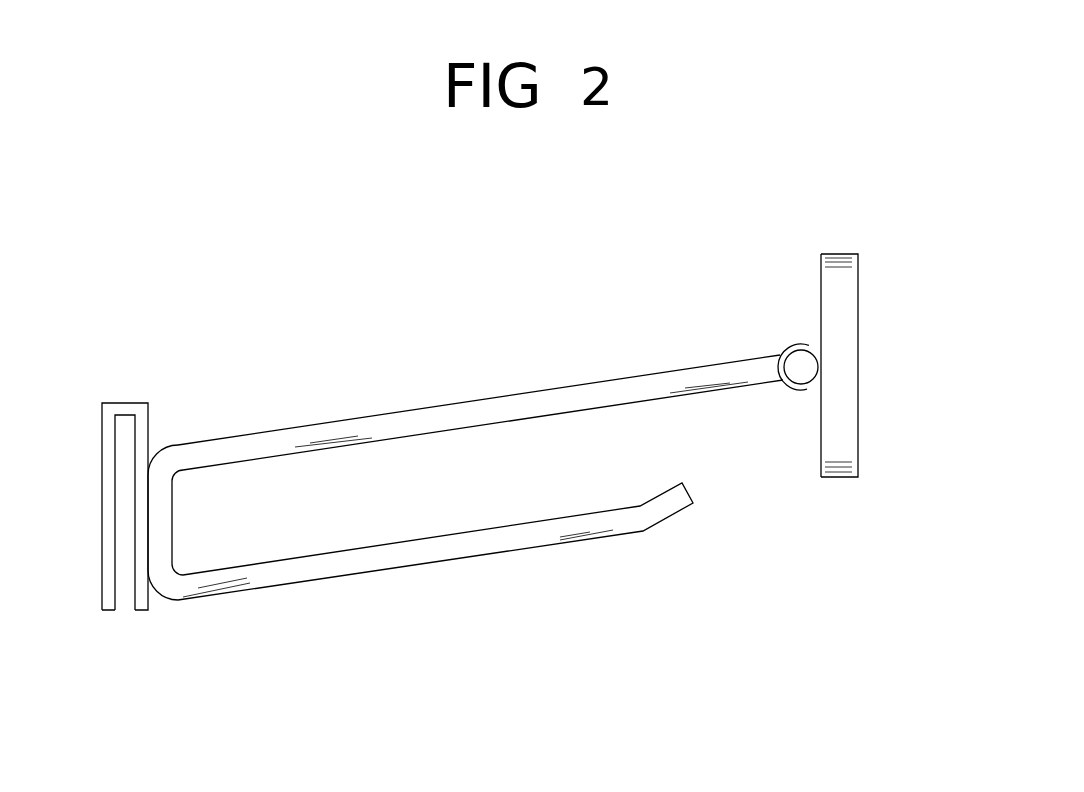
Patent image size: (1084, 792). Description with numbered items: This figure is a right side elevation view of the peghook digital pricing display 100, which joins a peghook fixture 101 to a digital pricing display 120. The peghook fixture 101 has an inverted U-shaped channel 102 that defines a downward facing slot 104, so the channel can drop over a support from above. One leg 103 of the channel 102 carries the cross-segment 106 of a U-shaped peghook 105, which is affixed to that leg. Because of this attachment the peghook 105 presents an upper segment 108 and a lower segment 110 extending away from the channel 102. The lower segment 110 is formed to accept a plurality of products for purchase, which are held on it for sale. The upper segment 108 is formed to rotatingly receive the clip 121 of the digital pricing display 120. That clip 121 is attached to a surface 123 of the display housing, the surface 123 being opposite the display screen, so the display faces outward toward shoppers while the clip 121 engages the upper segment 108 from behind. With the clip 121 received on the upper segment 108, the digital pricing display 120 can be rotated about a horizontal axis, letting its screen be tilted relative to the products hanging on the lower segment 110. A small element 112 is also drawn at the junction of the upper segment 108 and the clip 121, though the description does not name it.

The peghook digital pricing display 100 is at (300, 247).
The peghook fixture 101 is at (102, 455).
The inverted U-shaped channel 102 is at (148, 408).
The leg 103 is at (148, 598).
The downward facing slot 104 is at (123, 602).
The U-shaped peghook 105 is at (313, 427).
The cross-segment 106 is at (175, 517).
The upper segment 108 is at (417, 412).
The lower segment 110 is at (418, 563).
The pin 112 is at (810, 385).
The digital pricing display 120 is at (850, 248).
The clip 121 is at (797, 342).
The surface 123 is at (820, 293).